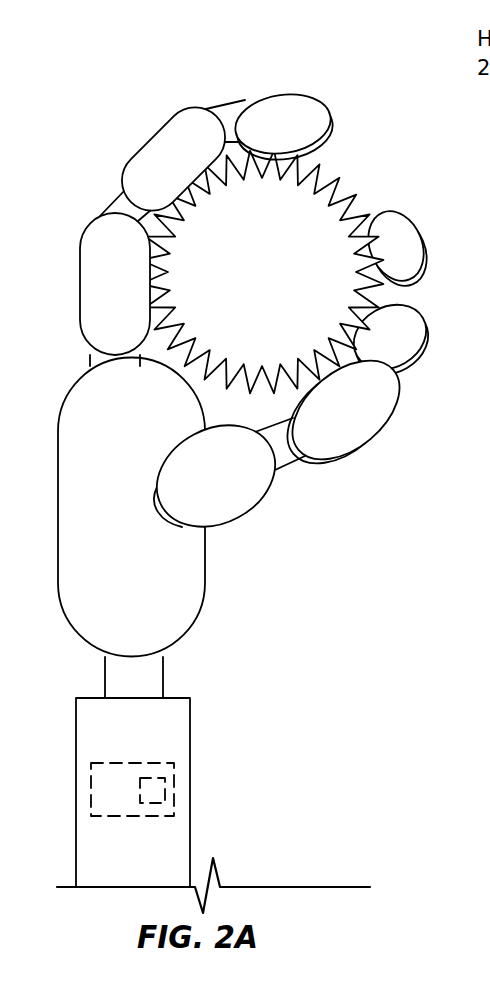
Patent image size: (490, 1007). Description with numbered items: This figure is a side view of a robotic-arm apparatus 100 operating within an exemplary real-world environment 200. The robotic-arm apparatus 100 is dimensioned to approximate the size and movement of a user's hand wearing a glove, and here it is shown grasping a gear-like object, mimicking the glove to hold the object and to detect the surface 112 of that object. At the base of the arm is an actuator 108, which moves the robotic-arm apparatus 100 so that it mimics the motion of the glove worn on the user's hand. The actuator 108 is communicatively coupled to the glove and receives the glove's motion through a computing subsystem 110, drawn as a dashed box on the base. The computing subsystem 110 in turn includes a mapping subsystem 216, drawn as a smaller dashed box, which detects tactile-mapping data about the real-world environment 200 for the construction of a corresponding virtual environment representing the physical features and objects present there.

The real-world environment 200 is at (110, 136).
The surface 112 is at (345, 182).
The robotic-arm apparatus 100 is at (205, 602).
The actuator 108 is at (190, 732).
The computing subsystem 110 is at (177, 783).
The mapping subsystem 216 is at (165, 795).